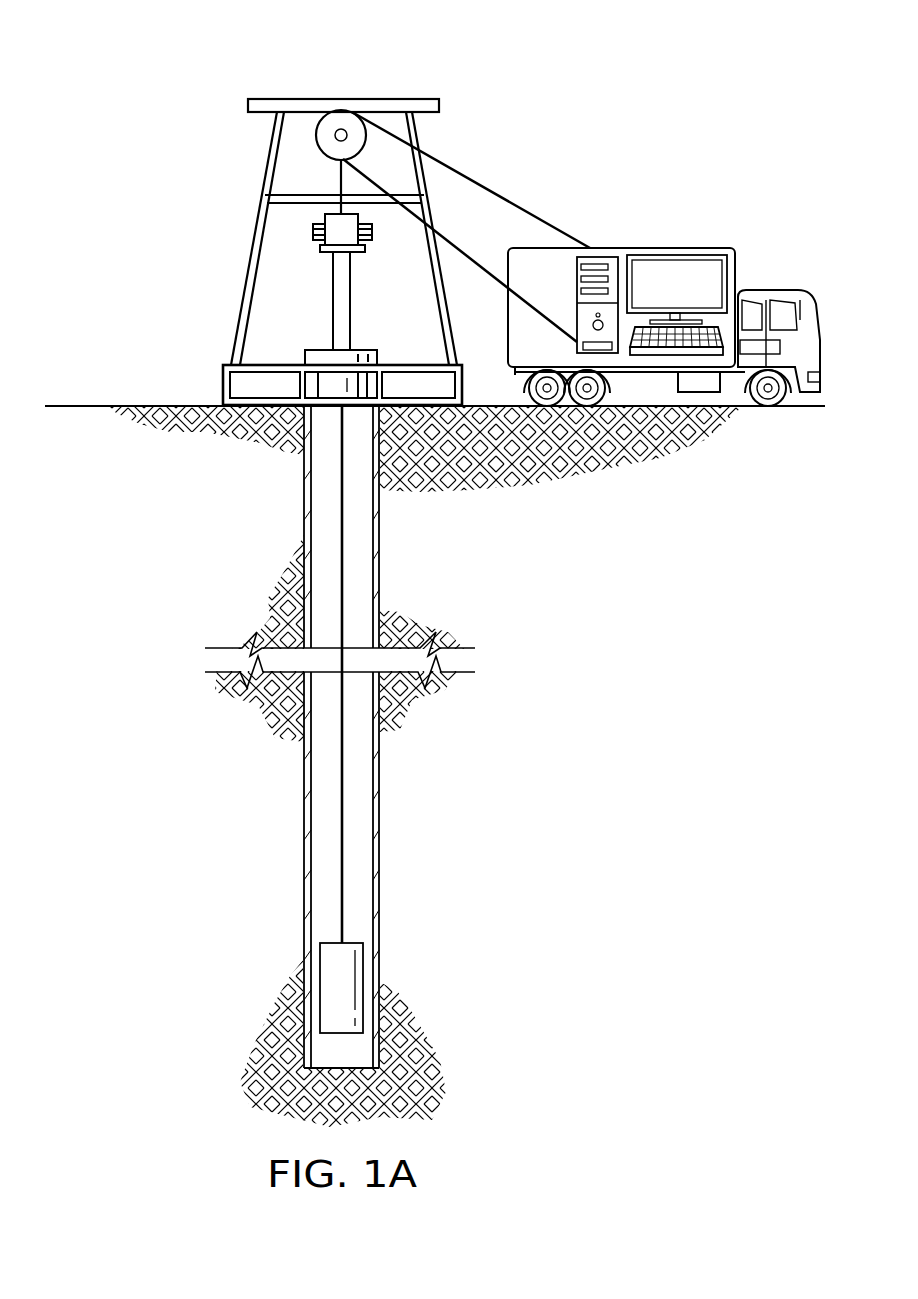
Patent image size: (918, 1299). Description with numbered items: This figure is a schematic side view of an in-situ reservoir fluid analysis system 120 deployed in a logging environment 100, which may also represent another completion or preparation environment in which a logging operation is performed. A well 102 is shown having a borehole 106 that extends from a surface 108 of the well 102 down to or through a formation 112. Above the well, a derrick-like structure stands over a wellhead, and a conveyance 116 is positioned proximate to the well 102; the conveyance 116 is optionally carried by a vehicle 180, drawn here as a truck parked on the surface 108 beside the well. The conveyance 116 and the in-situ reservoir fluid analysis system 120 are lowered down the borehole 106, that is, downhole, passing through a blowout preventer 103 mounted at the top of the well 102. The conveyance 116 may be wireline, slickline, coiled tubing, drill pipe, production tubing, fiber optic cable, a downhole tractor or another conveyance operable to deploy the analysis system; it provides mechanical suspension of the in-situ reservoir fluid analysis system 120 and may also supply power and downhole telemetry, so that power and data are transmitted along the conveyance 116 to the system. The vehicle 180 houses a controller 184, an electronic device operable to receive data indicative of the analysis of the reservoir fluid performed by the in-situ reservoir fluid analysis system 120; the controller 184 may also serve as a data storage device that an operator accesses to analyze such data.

The logging environment 100 is at (164, 65).
The well 102 is at (366, 344).
The blowout preventer 103 is at (333, 283).
The borehole 106 is at (379, 555).
The surface 108 is at (162, 404).
The formation 112 is at (530, 883).
The conveyance 116 is at (340, 897).
The in-situ reservoir fluid analysis system 120 is at (364, 981).
The vehicle 180 is at (656, 248).
The controller 184 is at (598, 257).